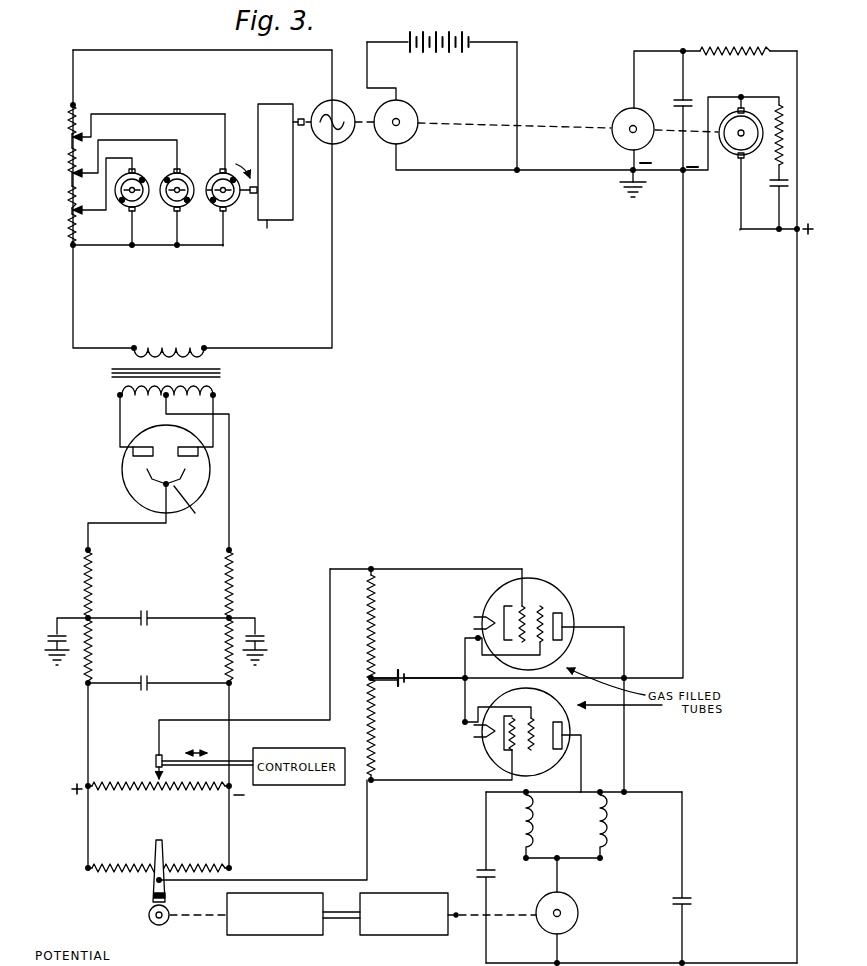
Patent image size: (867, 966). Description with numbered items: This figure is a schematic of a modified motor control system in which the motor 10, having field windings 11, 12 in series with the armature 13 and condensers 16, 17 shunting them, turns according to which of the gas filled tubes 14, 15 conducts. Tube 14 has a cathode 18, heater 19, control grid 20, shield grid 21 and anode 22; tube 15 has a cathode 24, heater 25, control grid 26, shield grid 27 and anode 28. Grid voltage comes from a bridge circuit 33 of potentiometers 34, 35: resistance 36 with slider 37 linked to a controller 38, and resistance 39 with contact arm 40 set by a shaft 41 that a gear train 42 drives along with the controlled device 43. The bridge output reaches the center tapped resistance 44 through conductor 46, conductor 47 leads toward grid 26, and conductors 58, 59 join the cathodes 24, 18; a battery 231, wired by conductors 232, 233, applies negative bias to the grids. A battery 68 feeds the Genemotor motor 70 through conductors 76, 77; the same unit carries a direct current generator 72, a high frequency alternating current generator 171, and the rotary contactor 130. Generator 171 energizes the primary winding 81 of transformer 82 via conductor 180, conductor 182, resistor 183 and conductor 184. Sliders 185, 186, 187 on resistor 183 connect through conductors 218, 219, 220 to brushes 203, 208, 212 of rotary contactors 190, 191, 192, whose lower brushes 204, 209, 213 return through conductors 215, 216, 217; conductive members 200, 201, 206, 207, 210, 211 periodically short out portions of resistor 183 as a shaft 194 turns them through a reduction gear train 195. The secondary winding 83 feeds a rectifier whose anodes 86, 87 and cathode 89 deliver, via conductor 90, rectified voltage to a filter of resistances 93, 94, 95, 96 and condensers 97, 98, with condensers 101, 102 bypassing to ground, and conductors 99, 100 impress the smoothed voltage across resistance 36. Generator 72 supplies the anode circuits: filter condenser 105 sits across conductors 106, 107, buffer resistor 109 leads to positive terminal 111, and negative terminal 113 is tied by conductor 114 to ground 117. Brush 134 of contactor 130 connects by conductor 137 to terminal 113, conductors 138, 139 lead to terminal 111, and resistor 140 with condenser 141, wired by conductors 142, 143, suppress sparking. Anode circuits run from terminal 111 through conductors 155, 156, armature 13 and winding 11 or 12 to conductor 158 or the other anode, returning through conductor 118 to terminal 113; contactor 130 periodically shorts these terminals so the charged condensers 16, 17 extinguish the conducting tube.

The motor 10 is at (583, 897).
The field winding 11 is at (607, 829).
The field winding 12 is at (518, 818).
The armature 13 is at (573, 921).
The gas filled thermionic discharge device 14 is at (566, 712).
The gas filled thermionic discharge device 15 is at (553, 592).
The condenser 16 is at (686, 896).
The condenser 17 is at (484, 868).
The cathode 18 is at (496, 754).
The cathode heater 19 is at (474, 746).
The control grid 20 is at (526, 749).
The shield grid 21 is at (566, 748).
The anode 22 is at (545, 724).
The cathode 24 is at (500, 604).
The heater 25 is at (474, 618).
The control grid 26 is at (530, 612).
The shield grid 27 is at (546, 645).
The anode 28 is at (563, 621).
The bridge circuit 33 is at (236, 808).
The potentiometer 34 is at (97, 784).
The potentiometer 35 is at (146, 880).
The resistance 36 is at (126, 790).
The slider 37 is at (155, 778).
The controller 38 is at (235, 787).
The resistance 39 is at (114, 868).
The contact arm 40 is at (165, 850).
The shaft 41 is at (150, 920).
The gear train 42 is at (168, 897).
The controlled device 43 is at (310, 937).
The center tapped resistance 44 is at (375, 651).
The conductor 46 is at (298, 880).
The conductor 47 is at (437, 937).
The conductor 58 is at (464, 654).
The conductor 59 is at (464, 702).
The battery 68 is at (472, 36).
The motor 70 is at (410, 112).
The direct current generator 72 is at (648, 114).
The conductor 76 is at (518, 68).
The conductor 77 is at (481, 170).
The primary winding 81 is at (184, 348).
The step-up transformer 82 is at (228, 373).
The secondary winding 83 is at (121, 419).
The anode 86 is at (132, 459).
The anode 87 is at (200, 455).
The filament cathode 89 is at (180, 498).
The conductor 90 is at (124, 524).
The resistance 93 is at (86, 566).
The resistance 94 is at (88, 680).
The resistance 95 is at (232, 579).
The resistance 96 is at (234, 632).
The condenser 97 is at (140, 612).
The condenser 98 is at (140, 676).
The conductor 99 is at (86, 722).
The conductor 100 is at (231, 700).
The condenser 101 is at (49, 636).
The condenser 102 is at (265, 636).
The filter condenser 105 is at (690, 98).
The conductor 106 is at (656, 51).
The conductor 107 is at (648, 195).
The resistor 109 is at (752, 50).
The terminal 111 is at (795, 235).
The terminal 113 is at (672, 172).
The conductor 114 is at (565, 171).
The ground 117 is at (620, 182).
The conductor 118 is at (682, 380).
The rotary contactor 130 is at (729, 160).
The brush 134 is at (740, 104).
The conductor 137 is at (708, 174).
The conductor 138 is at (742, 232).
The conductor 139 is at (786, 233).
The resistor 140 is at (772, 152).
The condenser 141 is at (768, 188).
The conductor 142 is at (780, 97).
The conductor 143 is at (769, 233).
The conductor 155 is at (796, 561).
The conductor 156 is at (632, 962).
The conductor 158 is at (626, 735).
The alternating current generator 171 is at (343, 134).
The conductor 180 is at (333, 262).
The conductor 182 is at (73, 318).
The resistor 183 is at (70, 230).
The conductor 184 is at (172, 50).
The slider 185 is at (70, 122).
The slider 186 is at (70, 160).
The slider 187 is at (70, 195).
The rotary contactor 190 is at (213, 211).
The rotary contactor 191 is at (166, 211).
The rotary contactor 192 is at (116, 208).
The shaft 194 is at (262, 222).
The reduction gear train 195 is at (286, 198).
The arcuate conductive member 200 is at (222, 172).
The arcuate conductive member 201 is at (230, 210).
The brush 203 is at (241, 160).
The brush 204 is at (229, 240).
The conductive member 206 is at (172, 170).
The conductive member 207 is at (199, 171).
The brush 208 is at (216, 169).
The brush 209 is at (196, 212).
The arcuate conductive member 210 is at (124, 140).
The arcuate conductive member 211 is at (147, 212).
The brush 212 is at (134, 158).
The brush 213 is at (120, 208).
The conductor 215 is at (222, 247).
The conductor 216 is at (173, 247).
The conductor 217 is at (122, 247).
The conductor 218 is at (212, 114).
The conductor 219 is at (172, 111).
The conductor 220 is at (88, 212).
The battery 231 is at (404, 689).
The conductor 232 is at (392, 684).
The conductor 233 is at (424, 681).